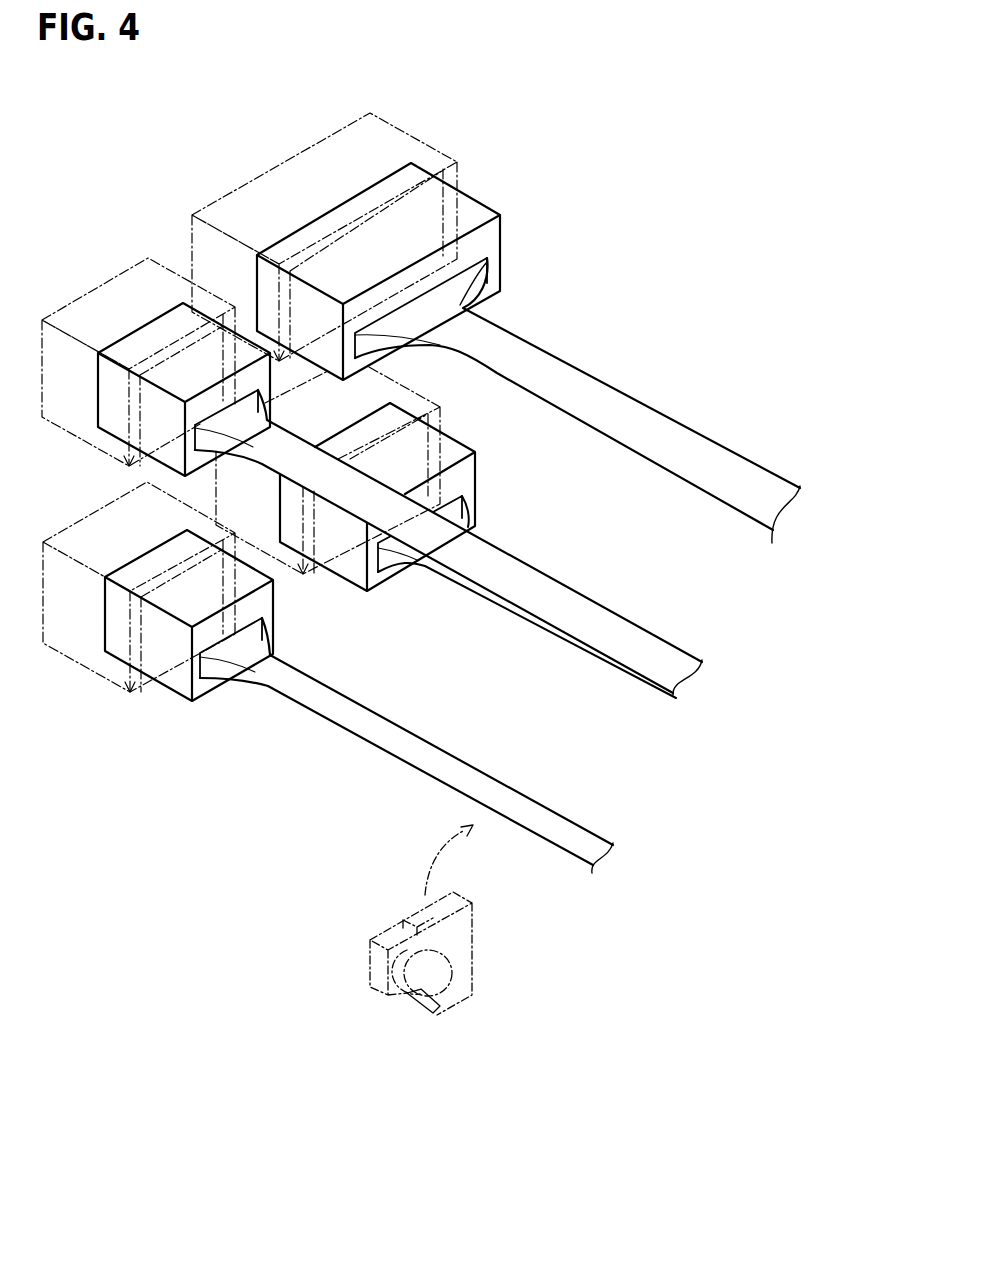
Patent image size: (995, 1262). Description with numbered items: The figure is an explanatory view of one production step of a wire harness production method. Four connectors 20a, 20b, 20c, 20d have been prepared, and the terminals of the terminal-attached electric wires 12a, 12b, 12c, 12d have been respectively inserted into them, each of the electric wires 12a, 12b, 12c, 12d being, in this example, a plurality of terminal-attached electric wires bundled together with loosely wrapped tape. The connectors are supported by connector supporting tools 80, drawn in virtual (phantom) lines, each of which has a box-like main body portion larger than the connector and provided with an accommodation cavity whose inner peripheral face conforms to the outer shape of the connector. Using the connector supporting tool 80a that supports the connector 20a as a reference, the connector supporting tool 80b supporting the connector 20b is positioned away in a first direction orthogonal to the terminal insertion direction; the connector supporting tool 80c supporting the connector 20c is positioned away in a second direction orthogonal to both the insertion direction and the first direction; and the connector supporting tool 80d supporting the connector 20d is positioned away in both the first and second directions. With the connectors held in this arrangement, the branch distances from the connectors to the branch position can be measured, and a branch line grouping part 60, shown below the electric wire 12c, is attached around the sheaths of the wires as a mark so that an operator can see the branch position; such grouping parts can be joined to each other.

The terminal-attached electric wire 12a is at (480, 540).
The terminal-attached electric wire 12b is at (637, 417).
The terminal-attached electric wire 12c is at (401, 754).
The terminal-attached electric wire 12d is at (427, 563).
The connector 20a is at (158, 462).
The connector 20b is at (490, 210).
The connector 20c is at (177, 695).
The connector 20d is at (383, 583).
The connector supporting tool 80 is at (250, 434).
The connector supporting tool 80a is at (80, 293).
The connector supporting tool 80b is at (303, 152).
The connector supporting tool 80c is at (88, 666).
The connector supporting tool 80d is at (308, 583).
The branch line grouping part 60 is at (437, 1017).